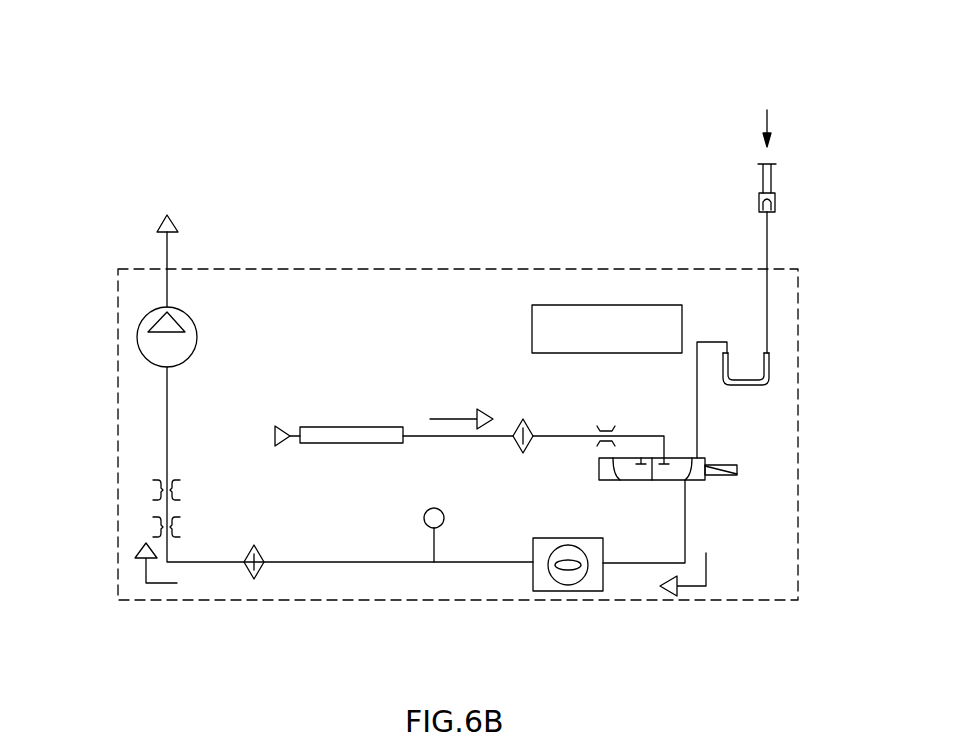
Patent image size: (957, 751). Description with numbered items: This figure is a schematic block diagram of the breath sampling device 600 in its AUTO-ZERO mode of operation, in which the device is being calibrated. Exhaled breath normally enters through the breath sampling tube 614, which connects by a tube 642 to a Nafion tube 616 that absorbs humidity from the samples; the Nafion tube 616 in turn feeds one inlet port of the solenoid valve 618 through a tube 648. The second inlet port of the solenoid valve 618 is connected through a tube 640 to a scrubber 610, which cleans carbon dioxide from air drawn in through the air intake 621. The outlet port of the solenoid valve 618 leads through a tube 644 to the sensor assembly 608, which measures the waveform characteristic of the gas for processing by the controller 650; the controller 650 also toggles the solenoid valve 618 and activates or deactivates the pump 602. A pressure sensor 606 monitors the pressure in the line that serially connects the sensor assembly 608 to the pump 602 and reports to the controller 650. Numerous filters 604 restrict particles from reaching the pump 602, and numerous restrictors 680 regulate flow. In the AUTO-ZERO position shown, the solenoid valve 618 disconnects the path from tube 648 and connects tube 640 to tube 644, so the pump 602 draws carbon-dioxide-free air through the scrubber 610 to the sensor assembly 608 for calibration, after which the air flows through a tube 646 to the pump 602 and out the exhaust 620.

The breath sampling device 600 is at (680, 70).
The pump 602 is at (138, 337).
The filter 604 is at (523, 419).
The pressure sensor 606 is at (425, 523).
The sensor assembly 608 is at (568, 591).
The scrubber 610 is at (318, 445).
The breath sampling tube 614 is at (776, 200).
The Nafion tube 616 is at (770, 365).
The solenoid valve 618 is at (705, 478).
The exhaust 620 is at (178, 222).
The air intake 621 is at (275, 436).
The tube 640 is at (575, 436).
The tube 642 is at (767, 310).
The tube 644 is at (637, 566).
The tube 646 is at (205, 566).
The tube 648 is at (697, 410).
The controller 650 is at (615, 305).
The restrictor 680 is at (155, 527).